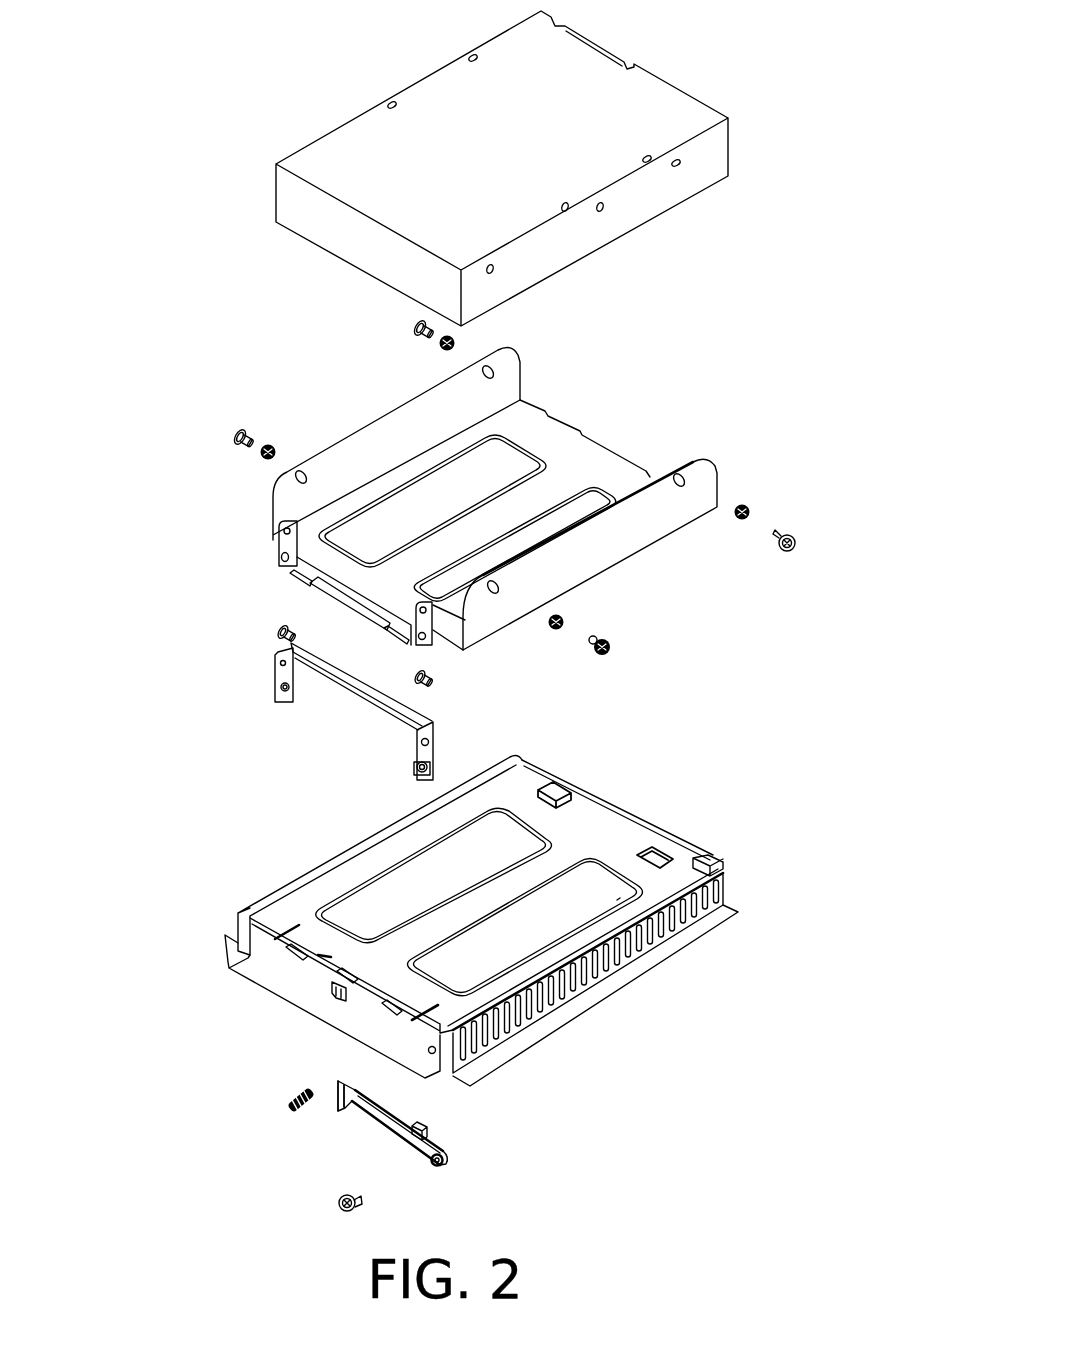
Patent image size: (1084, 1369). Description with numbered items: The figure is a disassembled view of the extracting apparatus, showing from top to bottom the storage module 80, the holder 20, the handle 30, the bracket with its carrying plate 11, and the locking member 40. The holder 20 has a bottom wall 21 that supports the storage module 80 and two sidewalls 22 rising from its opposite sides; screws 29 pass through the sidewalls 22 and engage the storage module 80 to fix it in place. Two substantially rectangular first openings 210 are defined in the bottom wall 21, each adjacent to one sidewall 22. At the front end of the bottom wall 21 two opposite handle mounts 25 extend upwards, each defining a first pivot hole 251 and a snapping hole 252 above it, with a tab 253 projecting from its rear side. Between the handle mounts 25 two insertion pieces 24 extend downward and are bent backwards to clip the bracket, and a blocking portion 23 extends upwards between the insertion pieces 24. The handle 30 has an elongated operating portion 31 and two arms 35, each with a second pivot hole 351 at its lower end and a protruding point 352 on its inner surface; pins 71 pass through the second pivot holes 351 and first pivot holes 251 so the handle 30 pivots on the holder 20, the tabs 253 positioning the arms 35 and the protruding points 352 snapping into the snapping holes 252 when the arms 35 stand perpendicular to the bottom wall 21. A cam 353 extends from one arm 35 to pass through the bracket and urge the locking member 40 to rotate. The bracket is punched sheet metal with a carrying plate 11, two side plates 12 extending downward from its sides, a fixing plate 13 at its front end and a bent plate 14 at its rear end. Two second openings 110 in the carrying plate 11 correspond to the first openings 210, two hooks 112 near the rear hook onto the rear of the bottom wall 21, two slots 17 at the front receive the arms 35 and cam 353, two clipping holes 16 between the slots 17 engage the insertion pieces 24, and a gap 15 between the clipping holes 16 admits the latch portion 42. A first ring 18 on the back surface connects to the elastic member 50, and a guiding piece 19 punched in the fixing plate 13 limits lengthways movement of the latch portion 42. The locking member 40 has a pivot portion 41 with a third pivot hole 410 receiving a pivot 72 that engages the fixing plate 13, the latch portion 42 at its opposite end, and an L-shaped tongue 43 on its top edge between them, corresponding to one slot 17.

The storage module 80 is at (671, 102).
The holder 20 is at (468, 537).
The bottom wall 21 is at (614, 468).
The sidewall 22 is at (388, 432).
The first opening 210 is at (513, 455).
The blocking portion 23 is at (337, 590).
The insertion piece 24 is at (313, 583).
The handle mount 25 is at (272, 538).
The first pivot hole 251 is at (437, 645).
The snapping hole 252 is at (433, 630).
The tab 253 is at (445, 616).
The screw 29 is at (792, 541).
The pin 71 is at (423, 688).
The handle 30 is at (312, 732).
The operating portion 31 is at (330, 683).
The arm 35 is at (275, 670).
The second pivot hole 351 is at (379, 791).
The protruding point 352 is at (420, 739).
The cam 353 is at (413, 762).
The carrying plate 11 is at (597, 806).
The second opening 110 is at (616, 899).
The hook 112 is at (653, 850).
The side plate 12 is at (635, 947).
The fixing plate 13 is at (430, 1072).
The bent plate 14 is at (718, 860).
The gap 15 is at (342, 972).
The clipping hole 16 is at (293, 953).
The slot 17 is at (293, 923).
The first ring 18 is at (325, 958).
The guiding piece 19 is at (337, 990).
The locking member 40 is at (407, 1157).
The pivot portion 41 is at (438, 1175).
The latch portion 42 is at (347, 1110).
The L-shaped tongue 43 is at (433, 1130).
The third pivot hole 410 is at (444, 1167).
The elastic member 50 is at (292, 1100).
The pivot 72 is at (337, 1197).